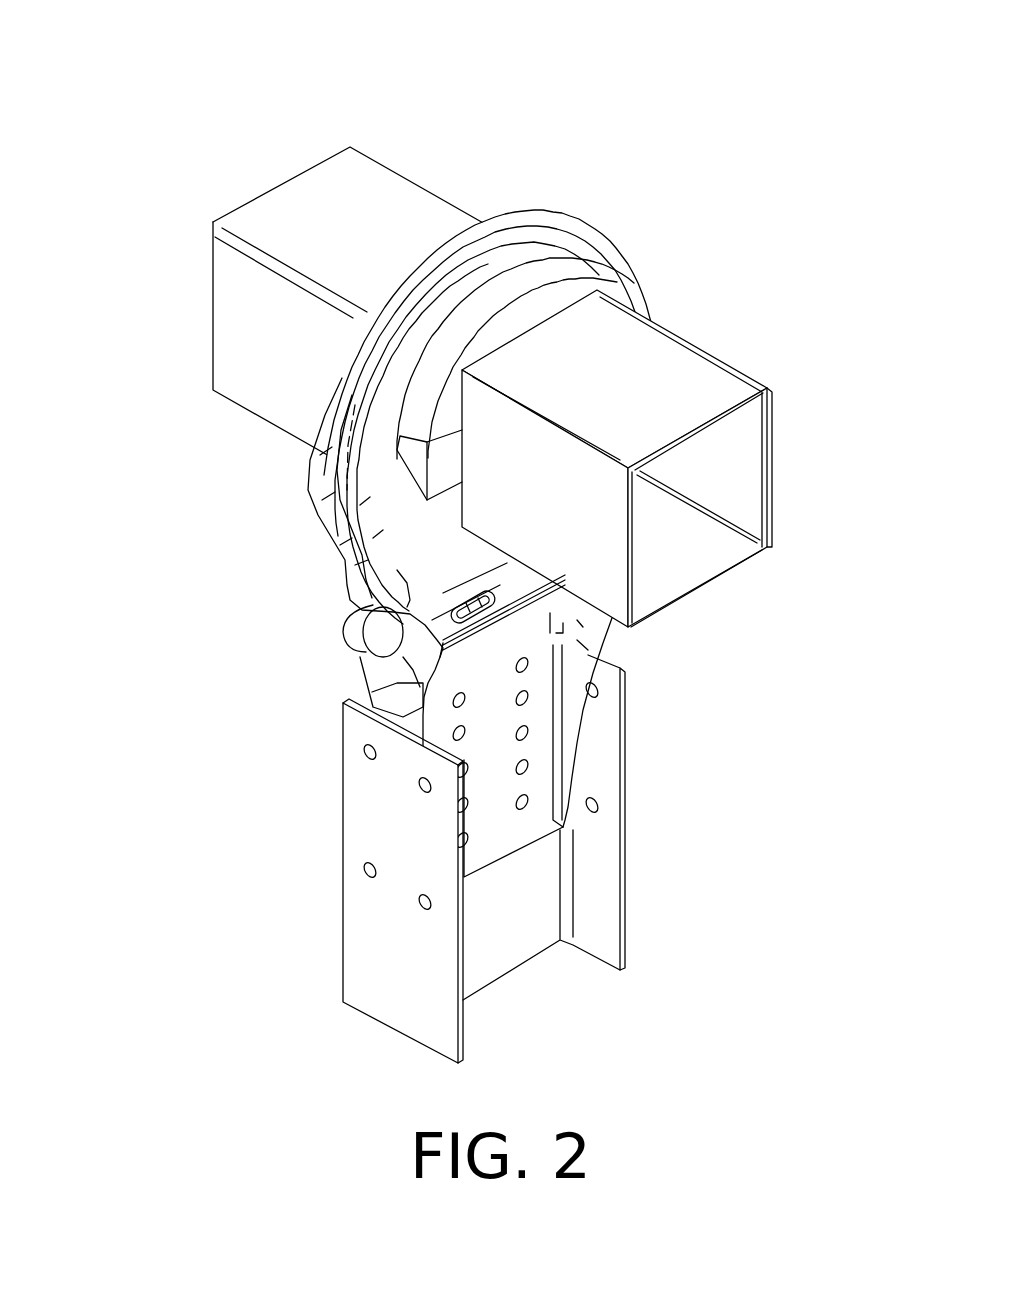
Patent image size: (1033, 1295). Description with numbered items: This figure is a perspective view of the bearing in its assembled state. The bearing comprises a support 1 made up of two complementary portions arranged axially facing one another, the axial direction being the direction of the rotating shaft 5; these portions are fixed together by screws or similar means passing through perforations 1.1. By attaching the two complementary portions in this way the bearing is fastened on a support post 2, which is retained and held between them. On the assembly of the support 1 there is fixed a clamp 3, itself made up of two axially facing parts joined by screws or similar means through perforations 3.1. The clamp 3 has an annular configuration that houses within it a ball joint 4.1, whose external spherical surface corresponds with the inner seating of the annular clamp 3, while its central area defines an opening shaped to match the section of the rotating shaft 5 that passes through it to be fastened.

The support 1 is at (496, 781).
The perforations 1.1 is at (524, 703).
The support post 2 is at (384, 964).
The clamp 3 is at (500, 222).
The perforations 3.1 is at (488, 603).
The ball joint 4.1 is at (427, 487).
The rotating shaft 5 is at (258, 323).